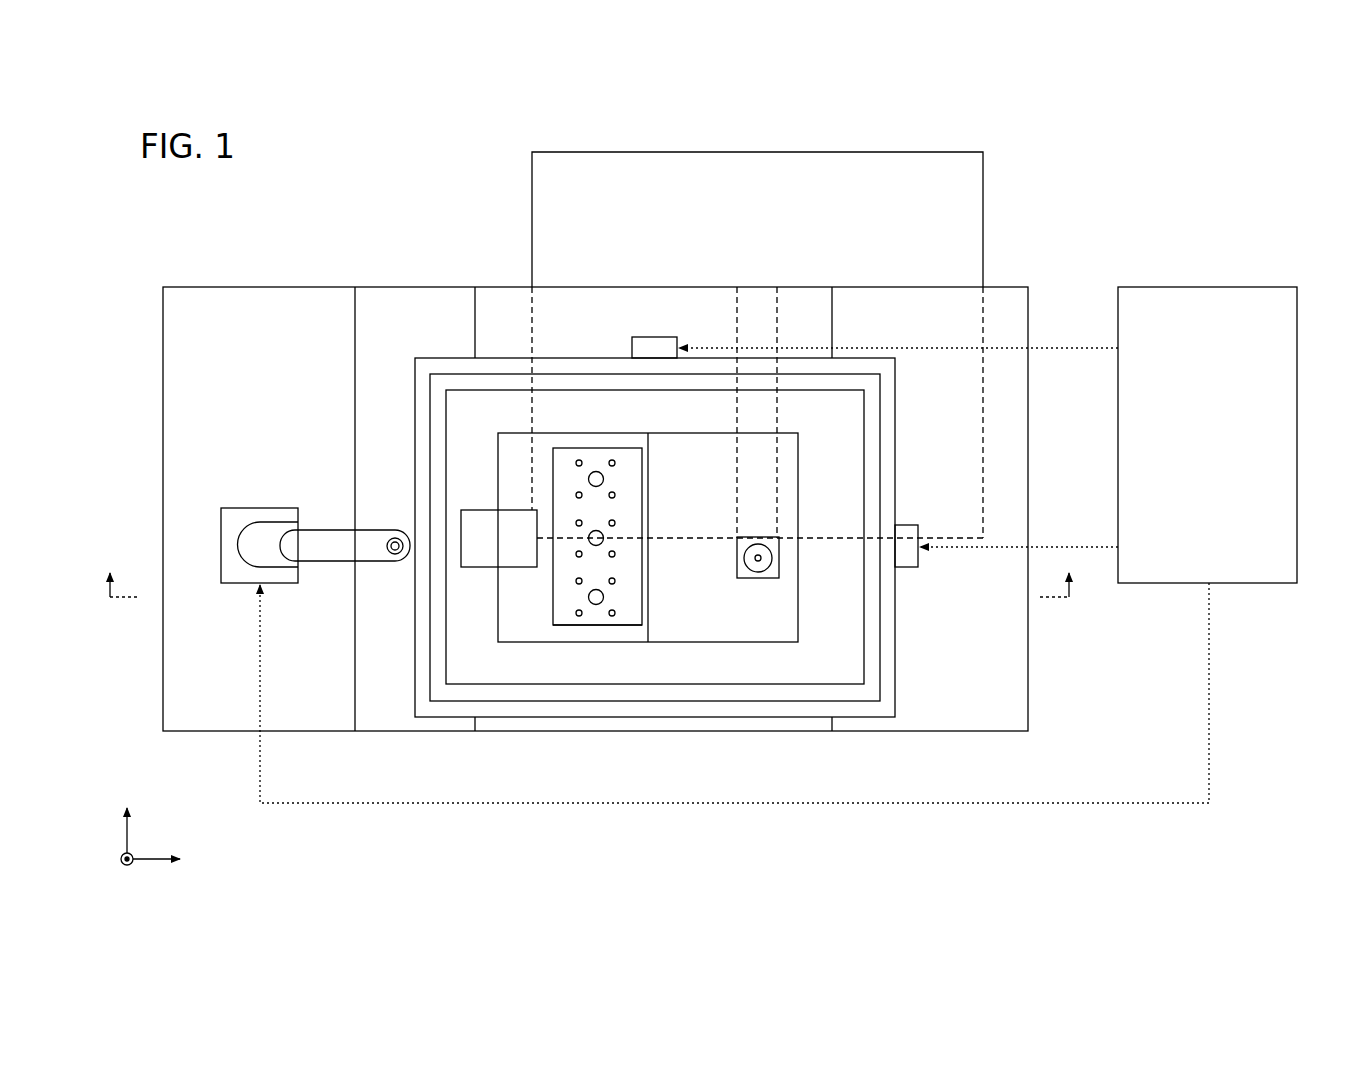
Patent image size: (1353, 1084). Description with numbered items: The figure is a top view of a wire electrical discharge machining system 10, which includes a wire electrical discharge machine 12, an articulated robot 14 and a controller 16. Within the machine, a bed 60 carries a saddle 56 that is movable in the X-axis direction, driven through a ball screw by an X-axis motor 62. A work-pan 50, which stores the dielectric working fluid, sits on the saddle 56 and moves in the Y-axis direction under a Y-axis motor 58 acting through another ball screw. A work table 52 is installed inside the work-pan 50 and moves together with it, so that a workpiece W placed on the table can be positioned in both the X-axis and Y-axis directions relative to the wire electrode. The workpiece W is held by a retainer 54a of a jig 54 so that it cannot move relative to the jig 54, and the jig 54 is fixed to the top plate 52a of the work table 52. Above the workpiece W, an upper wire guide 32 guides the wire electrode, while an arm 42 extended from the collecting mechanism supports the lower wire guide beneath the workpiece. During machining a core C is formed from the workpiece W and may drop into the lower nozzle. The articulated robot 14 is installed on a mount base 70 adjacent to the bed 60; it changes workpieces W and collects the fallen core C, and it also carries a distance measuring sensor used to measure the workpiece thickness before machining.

The wire electrical discharge machining system 10 is at (346, 201).
The wire electrical discharge machine 12 is at (1020, 192).
The articulated robot 14 is at (327, 508).
The controller 16 is at (1193, 285).
The upper wire guide 32 is at (779, 565).
The arm 42 is at (778, 478).
The work-pan 50 is at (888, 637).
The work table 52 is at (654, 686).
The top plate 52a is at (488, 657).
The jig 54 is at (562, 645).
The retainer 54a is at (618, 632).
The saddle 56 is at (814, 318).
The Y-axis motor 58 is at (649, 347).
The bed 60 is at (1010, 701).
The X-axis motor 62 is at (905, 567).
The mount base 70 is at (210, 708).
The workpiece W is at (570, 597).
The core C is at (596, 605).